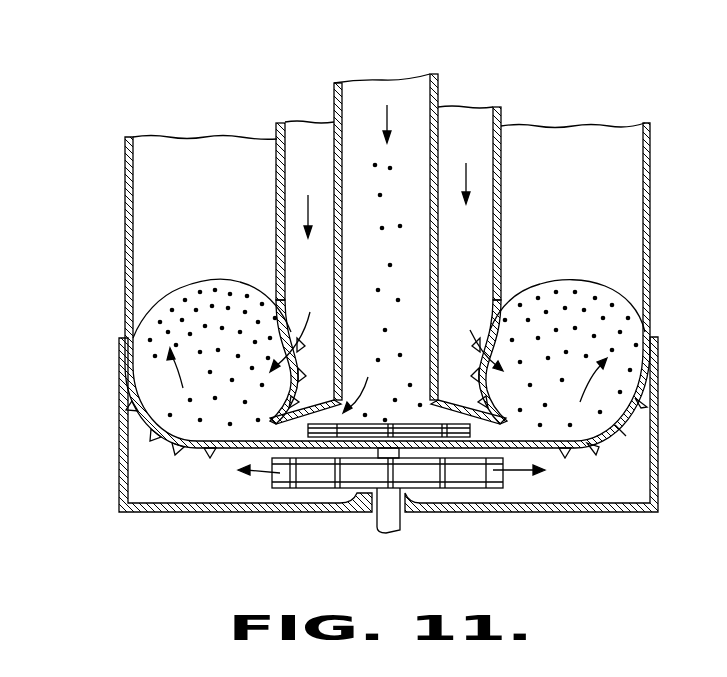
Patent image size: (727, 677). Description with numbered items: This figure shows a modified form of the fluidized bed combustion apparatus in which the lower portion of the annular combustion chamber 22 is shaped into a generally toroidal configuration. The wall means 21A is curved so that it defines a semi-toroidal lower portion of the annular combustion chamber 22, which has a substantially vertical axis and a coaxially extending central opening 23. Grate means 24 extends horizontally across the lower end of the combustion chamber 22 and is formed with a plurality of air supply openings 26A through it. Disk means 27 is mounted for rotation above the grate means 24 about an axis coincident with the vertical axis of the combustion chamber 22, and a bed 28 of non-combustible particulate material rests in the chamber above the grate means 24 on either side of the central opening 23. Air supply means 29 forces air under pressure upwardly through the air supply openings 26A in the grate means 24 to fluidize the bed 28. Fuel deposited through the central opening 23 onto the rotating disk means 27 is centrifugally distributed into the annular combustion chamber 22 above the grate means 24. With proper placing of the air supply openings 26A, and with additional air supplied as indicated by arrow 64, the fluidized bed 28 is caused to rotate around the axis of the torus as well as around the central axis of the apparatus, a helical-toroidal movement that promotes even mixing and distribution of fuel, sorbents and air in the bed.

The annular combustion chamber 22 is at (232, 172).
The central opening 23 is at (410, 87).
The arrow 64 is at (470, 206).
The bed 28 is at (618, 302).
The wall means 21A is at (130, 380).
The air supply openings 26A is at (177, 450).
The disk means 27 is at (405, 424).
The grate means 24 is at (233, 448).
The air supply means 29 is at (465, 488).